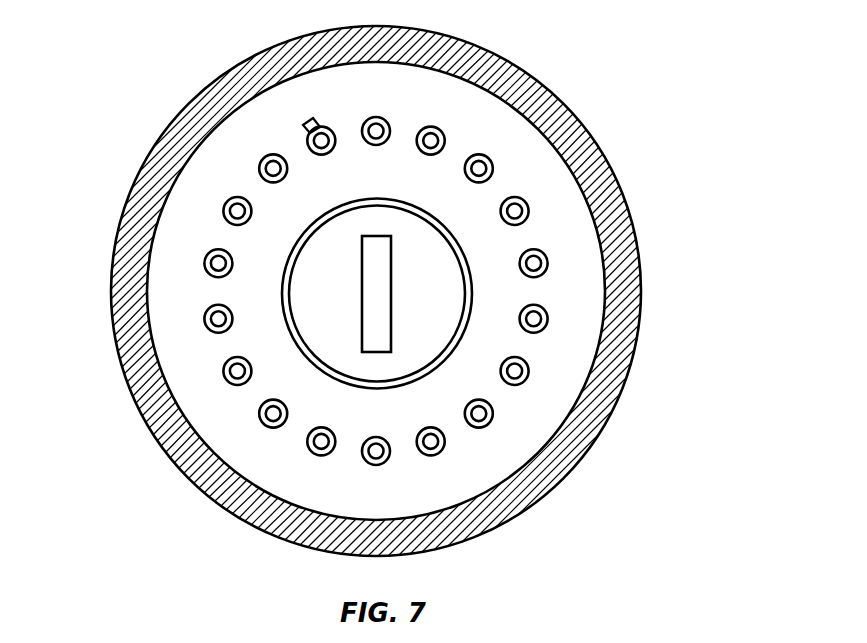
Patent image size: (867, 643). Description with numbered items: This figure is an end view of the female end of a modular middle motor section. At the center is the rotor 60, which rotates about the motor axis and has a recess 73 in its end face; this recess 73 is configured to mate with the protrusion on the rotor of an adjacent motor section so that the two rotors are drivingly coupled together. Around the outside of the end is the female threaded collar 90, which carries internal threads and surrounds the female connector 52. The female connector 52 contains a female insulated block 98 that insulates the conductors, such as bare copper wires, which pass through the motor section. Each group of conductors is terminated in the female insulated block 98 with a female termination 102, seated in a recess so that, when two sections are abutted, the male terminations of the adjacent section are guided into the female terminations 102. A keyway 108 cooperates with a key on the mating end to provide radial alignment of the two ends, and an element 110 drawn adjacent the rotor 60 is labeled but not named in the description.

The female connector 52 is at (475, 115).
The rotor 60 is at (375, 218).
The recess 73 is at (392, 300).
The female threaded collar 90 is at (587, 128).
The female insulated block 98 is at (225, 205).
The female termination 102 is at (206, 316).
The keyway 108 is at (309, 126).
The inner rim 110 is at (378, 385).